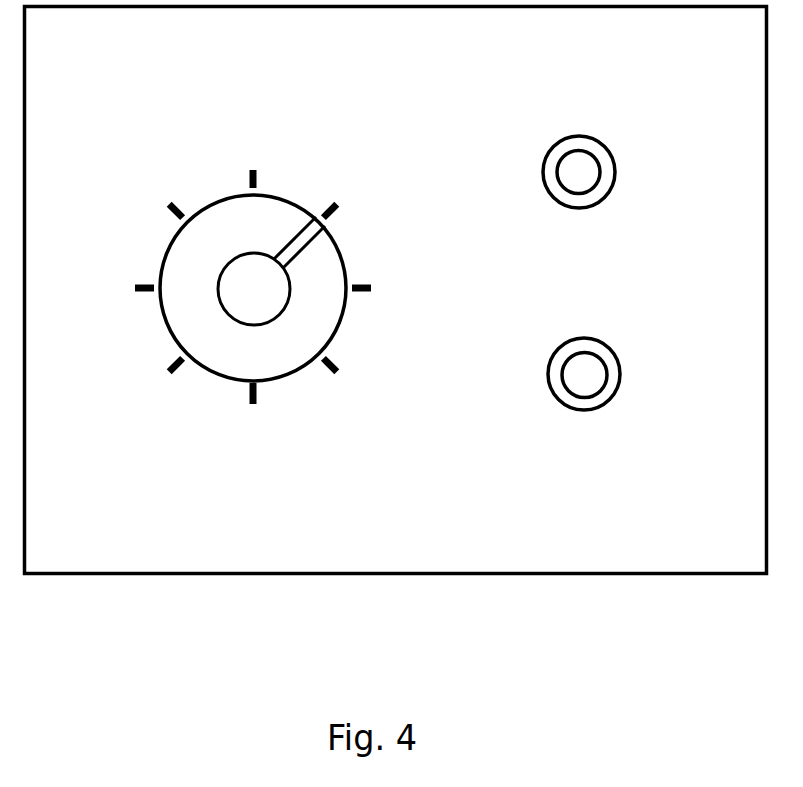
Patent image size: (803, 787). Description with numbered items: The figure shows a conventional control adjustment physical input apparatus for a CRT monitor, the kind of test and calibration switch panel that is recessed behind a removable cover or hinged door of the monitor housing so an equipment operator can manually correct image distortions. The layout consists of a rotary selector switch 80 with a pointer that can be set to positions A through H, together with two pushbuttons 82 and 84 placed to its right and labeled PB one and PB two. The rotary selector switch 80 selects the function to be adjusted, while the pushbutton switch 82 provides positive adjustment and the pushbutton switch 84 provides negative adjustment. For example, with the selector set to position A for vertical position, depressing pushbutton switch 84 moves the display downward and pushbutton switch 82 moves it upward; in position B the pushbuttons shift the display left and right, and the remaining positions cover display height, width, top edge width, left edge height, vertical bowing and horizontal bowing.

The rotary selector switch 80 is at (309, 134).
The pushbutton switch 82 is at (590, 138).
The pushbutton switch 84 is at (600, 340).